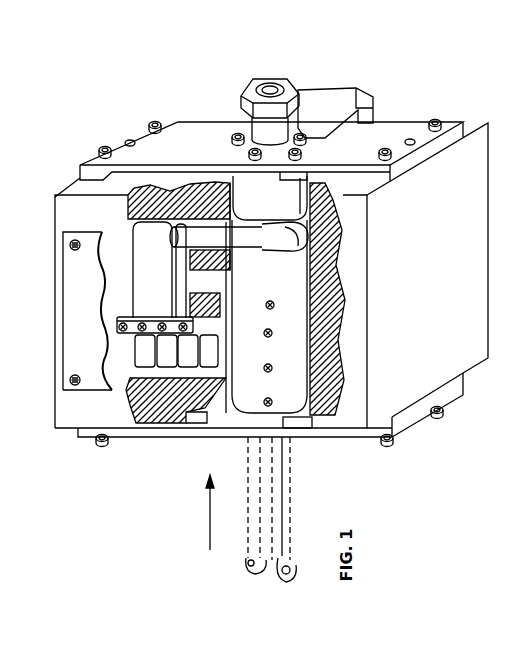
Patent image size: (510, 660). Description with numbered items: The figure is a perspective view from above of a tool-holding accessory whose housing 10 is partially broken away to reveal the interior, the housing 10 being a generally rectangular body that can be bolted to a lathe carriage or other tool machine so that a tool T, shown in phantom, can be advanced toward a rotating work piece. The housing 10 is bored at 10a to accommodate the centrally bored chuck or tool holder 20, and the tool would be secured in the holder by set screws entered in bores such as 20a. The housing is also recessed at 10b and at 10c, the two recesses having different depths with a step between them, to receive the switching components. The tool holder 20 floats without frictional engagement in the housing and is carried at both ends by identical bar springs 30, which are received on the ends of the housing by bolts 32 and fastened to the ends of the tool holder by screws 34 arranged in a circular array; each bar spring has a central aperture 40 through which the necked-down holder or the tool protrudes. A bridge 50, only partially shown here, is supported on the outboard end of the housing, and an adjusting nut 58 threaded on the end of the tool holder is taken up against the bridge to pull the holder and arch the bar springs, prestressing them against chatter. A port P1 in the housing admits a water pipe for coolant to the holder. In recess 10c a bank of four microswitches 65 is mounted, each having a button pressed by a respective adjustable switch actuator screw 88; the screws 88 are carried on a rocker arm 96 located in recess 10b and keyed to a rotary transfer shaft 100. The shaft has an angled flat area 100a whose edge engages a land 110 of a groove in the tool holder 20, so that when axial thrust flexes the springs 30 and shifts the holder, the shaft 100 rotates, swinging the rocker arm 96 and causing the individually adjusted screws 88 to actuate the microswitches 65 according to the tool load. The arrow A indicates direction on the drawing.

The housing 10 is at (62, 218).
The bore 10a is at (308, 400).
The recess 10b is at (130, 343).
The recess 10c is at (122, 243).
The tool holder 20 is at (252, 291).
The set screw bores 20a is at (266, 370).
The bar springs 30 is at (190, 135).
The bolts 32 is at (153, 118).
The screws 34 is at (308, 138).
The central aperture 40 is at (237, 141).
The bridge 50 is at (318, 93).
The adjusting nut 58 is at (250, 88).
The microswitches 65 is at (176, 351).
The adjustable switch actuator screws 88 is at (122, 322).
The rocker arm 96 is at (155, 240).
The rotary transfer shaft 100 is at (200, 227).
The flat area 100a is at (260, 242).
The land 110 is at (289, 220).
The port P1 is at (272, 308).
The direction arrow A is at (206, 506).
The tool T is at (245, 502).